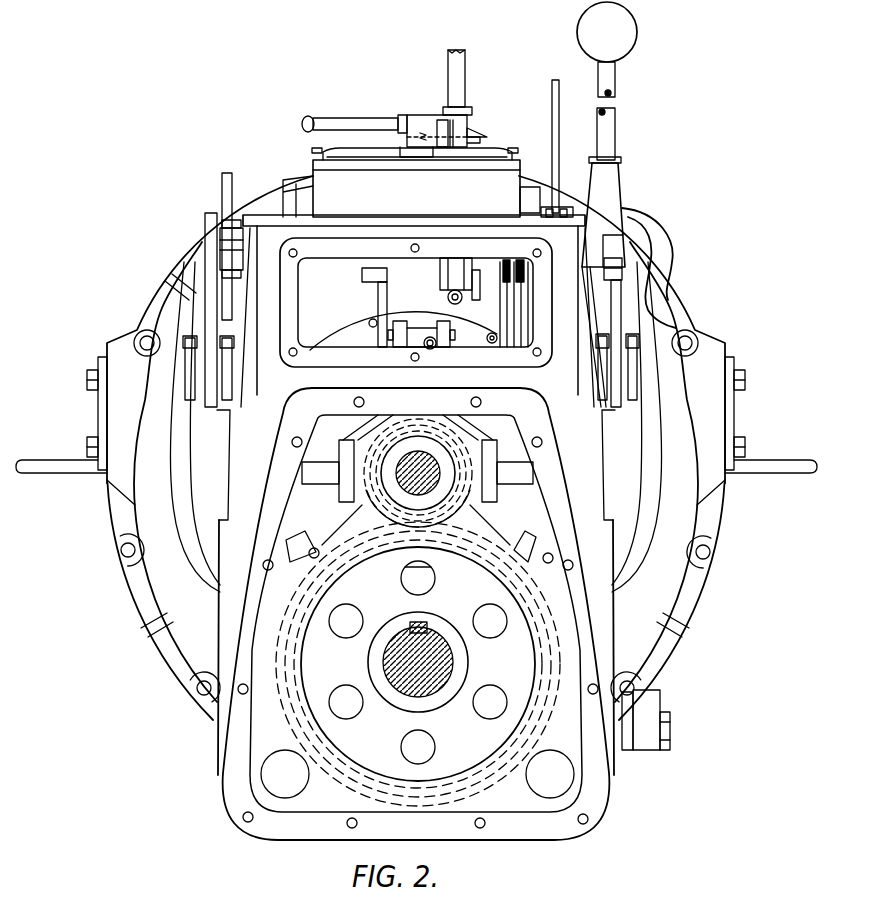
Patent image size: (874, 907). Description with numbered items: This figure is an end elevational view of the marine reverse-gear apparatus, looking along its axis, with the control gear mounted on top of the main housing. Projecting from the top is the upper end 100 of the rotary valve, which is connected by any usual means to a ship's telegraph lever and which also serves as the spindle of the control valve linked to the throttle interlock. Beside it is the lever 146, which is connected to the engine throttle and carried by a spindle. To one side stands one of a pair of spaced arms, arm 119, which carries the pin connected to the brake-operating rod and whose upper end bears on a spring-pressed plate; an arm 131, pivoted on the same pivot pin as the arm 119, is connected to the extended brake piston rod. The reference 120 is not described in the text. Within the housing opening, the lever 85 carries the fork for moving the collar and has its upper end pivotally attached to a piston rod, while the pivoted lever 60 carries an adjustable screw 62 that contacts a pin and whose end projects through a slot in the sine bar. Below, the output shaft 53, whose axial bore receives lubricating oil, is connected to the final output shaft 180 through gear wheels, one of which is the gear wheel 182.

The upper end of rotary valve 100 is at (468, 82).
The lever 146 is at (559, 133).
The arm 119 is at (545, 226).
The shift rod 120 is at (513, 263).
The arm 131 is at (517, 322).
The lever 85 is at (364, 276).
The lever 60 is at (420, 330).
The adjustable screw 62 is at (440, 347).
The output shaft 53 is at (428, 470).
The gear wheel 182 is at (513, 583).
The final output shaft 180 is at (435, 648).